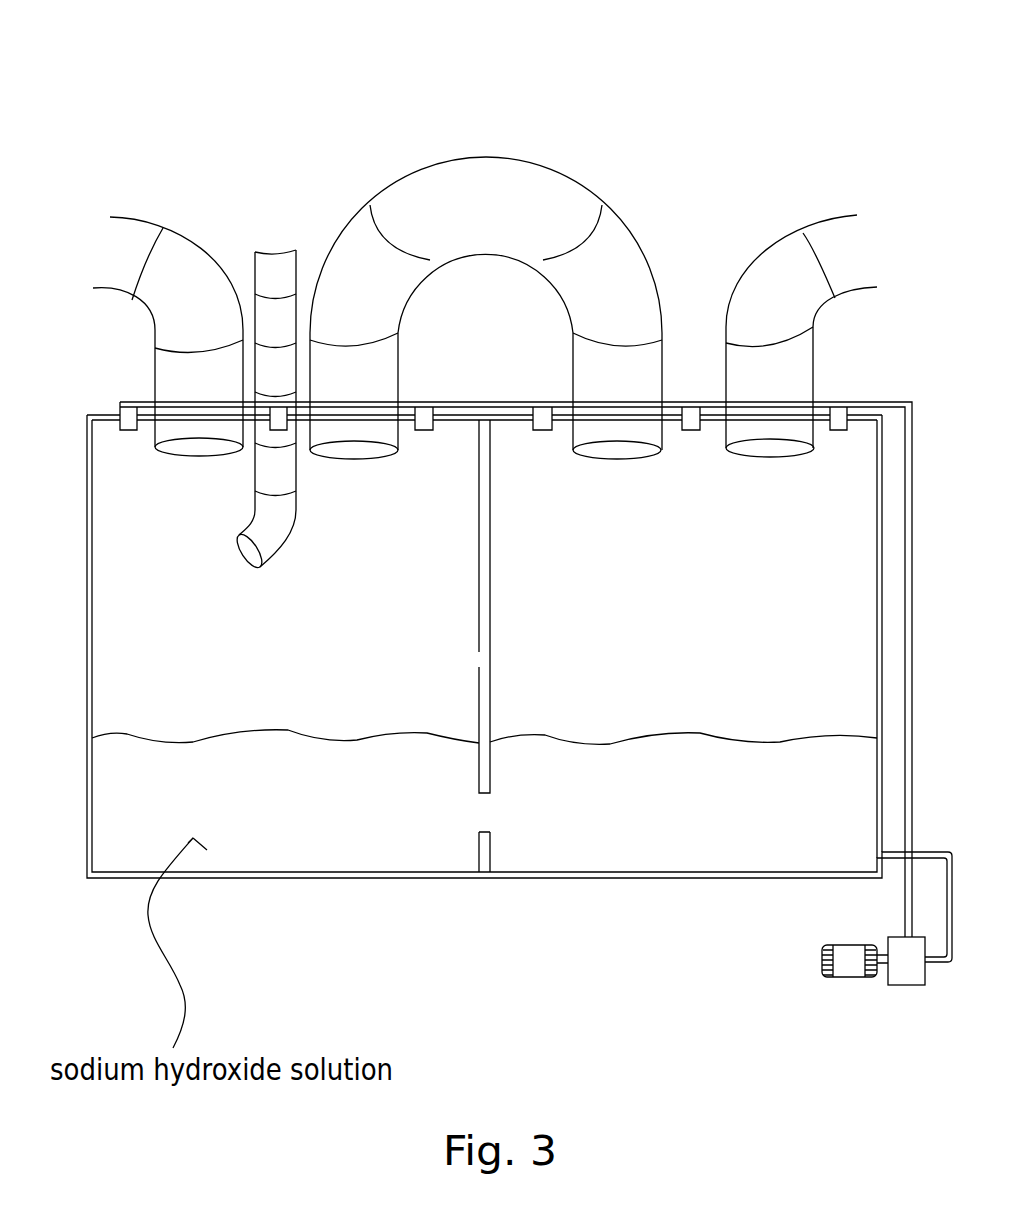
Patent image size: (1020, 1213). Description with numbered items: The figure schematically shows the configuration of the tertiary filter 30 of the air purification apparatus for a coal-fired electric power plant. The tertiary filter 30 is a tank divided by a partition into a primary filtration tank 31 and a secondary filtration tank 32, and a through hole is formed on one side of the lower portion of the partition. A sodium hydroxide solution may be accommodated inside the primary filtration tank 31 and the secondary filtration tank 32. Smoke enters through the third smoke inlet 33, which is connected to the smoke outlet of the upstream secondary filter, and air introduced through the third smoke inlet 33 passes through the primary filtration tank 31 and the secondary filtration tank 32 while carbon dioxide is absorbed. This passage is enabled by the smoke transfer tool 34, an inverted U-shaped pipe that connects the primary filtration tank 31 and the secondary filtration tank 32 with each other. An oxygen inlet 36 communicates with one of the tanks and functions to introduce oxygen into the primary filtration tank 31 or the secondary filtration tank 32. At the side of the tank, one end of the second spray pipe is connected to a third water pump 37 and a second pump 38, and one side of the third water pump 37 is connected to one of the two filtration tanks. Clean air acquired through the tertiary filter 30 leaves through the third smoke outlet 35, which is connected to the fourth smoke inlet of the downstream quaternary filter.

The tertiary filter 30 is at (720, 123).
The primary filtration tank 31 is at (327, 823).
The secondary filtration tank 32 is at (638, 835).
The third smoke inlet 33 is at (107, 261).
The smoke transfer tool 34 is at (483, 155).
The third smoke outlet 35 is at (857, 255).
The oxygen inlet 36 is at (285, 250).
The third water pump 37 is at (905, 988).
The second pump 38 is at (848, 978).